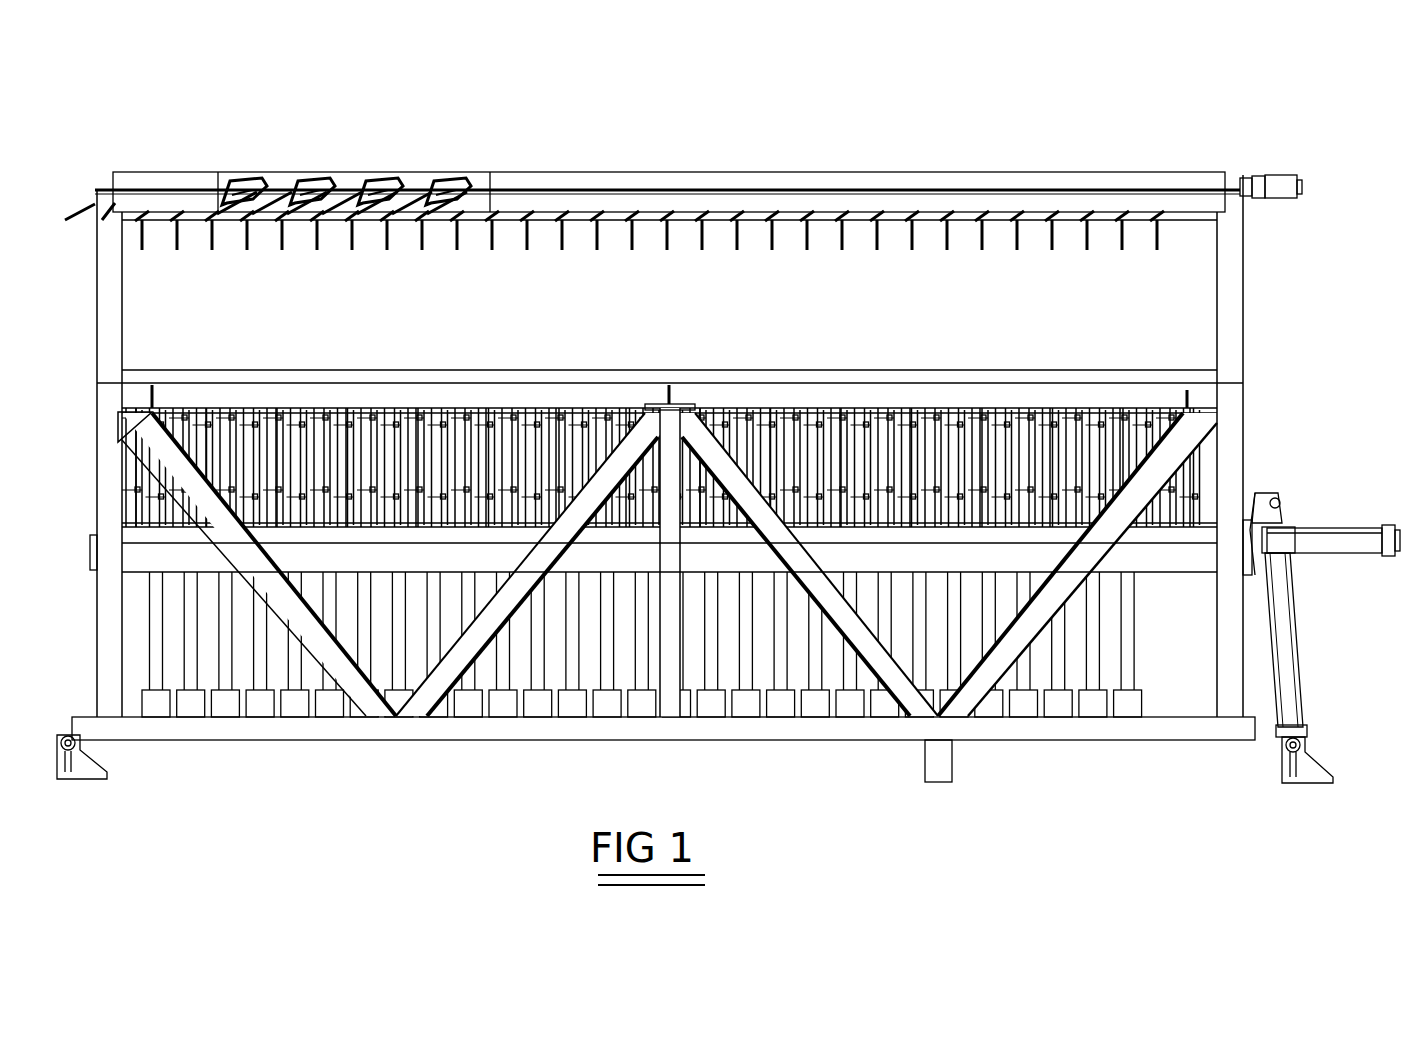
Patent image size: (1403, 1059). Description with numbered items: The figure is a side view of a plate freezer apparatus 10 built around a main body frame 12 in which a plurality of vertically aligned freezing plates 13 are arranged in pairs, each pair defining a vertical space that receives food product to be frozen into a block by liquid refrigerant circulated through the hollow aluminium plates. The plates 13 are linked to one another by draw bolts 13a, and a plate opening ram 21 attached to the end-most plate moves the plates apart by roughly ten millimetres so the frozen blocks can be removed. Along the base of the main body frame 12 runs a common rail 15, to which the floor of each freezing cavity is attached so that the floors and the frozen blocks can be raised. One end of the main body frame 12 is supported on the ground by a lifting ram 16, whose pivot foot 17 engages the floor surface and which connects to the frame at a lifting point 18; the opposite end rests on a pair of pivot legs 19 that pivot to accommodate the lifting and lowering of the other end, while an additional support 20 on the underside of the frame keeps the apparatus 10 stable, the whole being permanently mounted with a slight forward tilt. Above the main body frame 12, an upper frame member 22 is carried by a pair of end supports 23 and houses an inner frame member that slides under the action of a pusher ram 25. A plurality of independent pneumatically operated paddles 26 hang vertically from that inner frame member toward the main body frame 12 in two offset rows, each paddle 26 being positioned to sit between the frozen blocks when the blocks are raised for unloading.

The plate freezer apparatus 10 is at (360, 142).
The main body frame 12 is at (1243, 452).
The freezing plates 13 is at (985, 445).
The draw bolts 13a is at (440, 415).
The common rail 15 is at (470, 718).
The lifting ram 16 is at (1290, 680).
The pivot foot 17 is at (1320, 775).
The lifting point 18 is at (1285, 503).
The pivot legs 19 is at (87, 770).
The additional support 20 is at (945, 765).
The plate opening ram 21 is at (1357, 545).
The upper frame member 22 is at (1175, 182).
The end supports 23 is at (103, 312).
The pusher ram 25 is at (1303, 183).
The paddles 26 is at (720, 248).